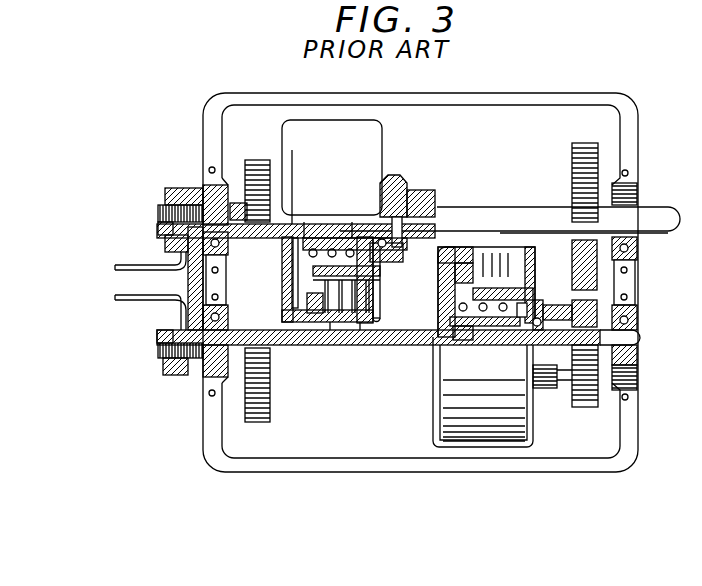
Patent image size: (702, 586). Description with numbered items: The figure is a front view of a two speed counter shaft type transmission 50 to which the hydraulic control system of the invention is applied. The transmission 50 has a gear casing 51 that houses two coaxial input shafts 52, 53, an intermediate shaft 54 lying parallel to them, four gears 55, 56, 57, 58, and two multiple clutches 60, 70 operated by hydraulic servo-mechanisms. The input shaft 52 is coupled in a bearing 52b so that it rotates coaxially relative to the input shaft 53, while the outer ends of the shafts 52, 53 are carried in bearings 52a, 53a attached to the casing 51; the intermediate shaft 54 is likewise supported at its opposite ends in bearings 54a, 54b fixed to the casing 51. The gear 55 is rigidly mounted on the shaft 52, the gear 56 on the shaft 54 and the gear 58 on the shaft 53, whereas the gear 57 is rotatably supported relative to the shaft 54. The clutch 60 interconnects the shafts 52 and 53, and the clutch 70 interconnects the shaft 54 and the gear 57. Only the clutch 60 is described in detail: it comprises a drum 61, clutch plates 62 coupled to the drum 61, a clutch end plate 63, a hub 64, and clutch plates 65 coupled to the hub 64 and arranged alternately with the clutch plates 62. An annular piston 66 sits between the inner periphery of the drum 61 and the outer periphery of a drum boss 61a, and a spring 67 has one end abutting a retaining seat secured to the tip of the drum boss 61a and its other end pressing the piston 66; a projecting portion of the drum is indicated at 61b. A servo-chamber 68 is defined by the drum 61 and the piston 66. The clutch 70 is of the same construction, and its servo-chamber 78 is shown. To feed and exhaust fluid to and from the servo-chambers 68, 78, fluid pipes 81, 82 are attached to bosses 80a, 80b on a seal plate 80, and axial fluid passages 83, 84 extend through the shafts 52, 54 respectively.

The transmission 50 is at (362, 503).
The gear casing 51 is at (423, 470).
The input shaft 52 is at (160, 210).
The bearing 52a is at (216, 203).
The bearing 52b is at (398, 222).
The input shaft 53 is at (662, 206).
The bearing 53a is at (637, 251).
The intermediate shaft 54 is at (158, 350).
The bearing 54a is at (205, 378).
The bearing 54b is at (637, 313).
The gear 55 is at (258, 160).
The gear 56 is at (270, 415).
The gear 57 is at (582, 407).
The gear 58 is at (578, 150).
The clutch 60 is at (346, 120).
The drum 61 is at (287, 323).
The drum boss 61a is at (323, 238).
The frame post 61b is at (363, 243).
The clutch plates 62 is at (345, 322).
The clutch end plate 63 is at (368, 325).
The hub 64 is at (375, 272).
The clutch plates 65 is at (365, 281).
The annular piston 66 is at (304, 224).
The spring 67 is at (352, 224).
The servo-chamber 68 is at (293, 140).
The clutch 70 is at (533, 438).
The servo-chamber 78 is at (432, 317).
The seal plate 80 is at (188, 280).
The boss 80a is at (168, 243).
The boss 80b is at (170, 375).
The fluid pipe 81 is at (115, 268).
The fluid pipe 82 is at (115, 300).
The axial fluid passage 83 is at (239, 203).
The axial fluid passage 84 is at (373, 345).